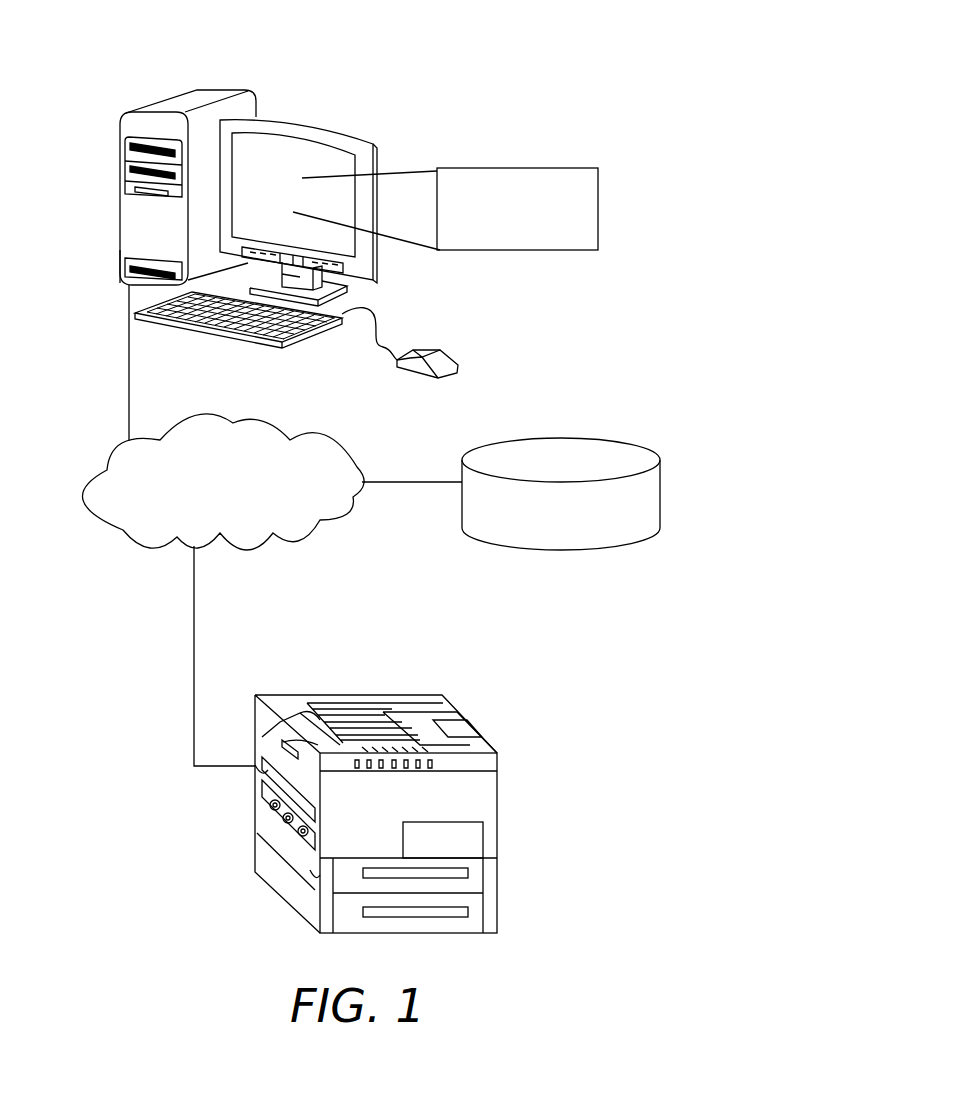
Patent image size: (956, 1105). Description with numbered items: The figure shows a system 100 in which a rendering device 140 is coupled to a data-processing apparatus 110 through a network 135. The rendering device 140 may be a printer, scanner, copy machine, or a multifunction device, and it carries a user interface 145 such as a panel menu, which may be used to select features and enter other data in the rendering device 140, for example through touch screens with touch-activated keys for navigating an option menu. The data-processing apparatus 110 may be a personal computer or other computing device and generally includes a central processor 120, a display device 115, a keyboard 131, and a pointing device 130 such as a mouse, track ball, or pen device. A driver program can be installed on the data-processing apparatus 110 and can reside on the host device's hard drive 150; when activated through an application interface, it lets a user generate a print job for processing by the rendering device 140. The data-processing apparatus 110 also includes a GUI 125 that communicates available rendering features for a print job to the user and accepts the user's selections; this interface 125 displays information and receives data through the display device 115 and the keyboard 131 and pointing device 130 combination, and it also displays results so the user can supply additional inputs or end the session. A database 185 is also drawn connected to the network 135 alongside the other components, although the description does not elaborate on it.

The system 100 is at (461, 70).
The hard drive 150 is at (157, 100).
The central processor 120 is at (128, 277).
The display device 115 is at (300, 123).
The data-processing apparatus 110 is at (322, 162).
The GUI 125 is at (542, 168).
The keyboard 131 is at (210, 325).
The pointing device 130 is at (437, 350).
The network 135 is at (255, 420).
The database 185 is at (603, 437).
The rendering device 140 is at (392, 695).
The user interface 145 is at (430, 742).